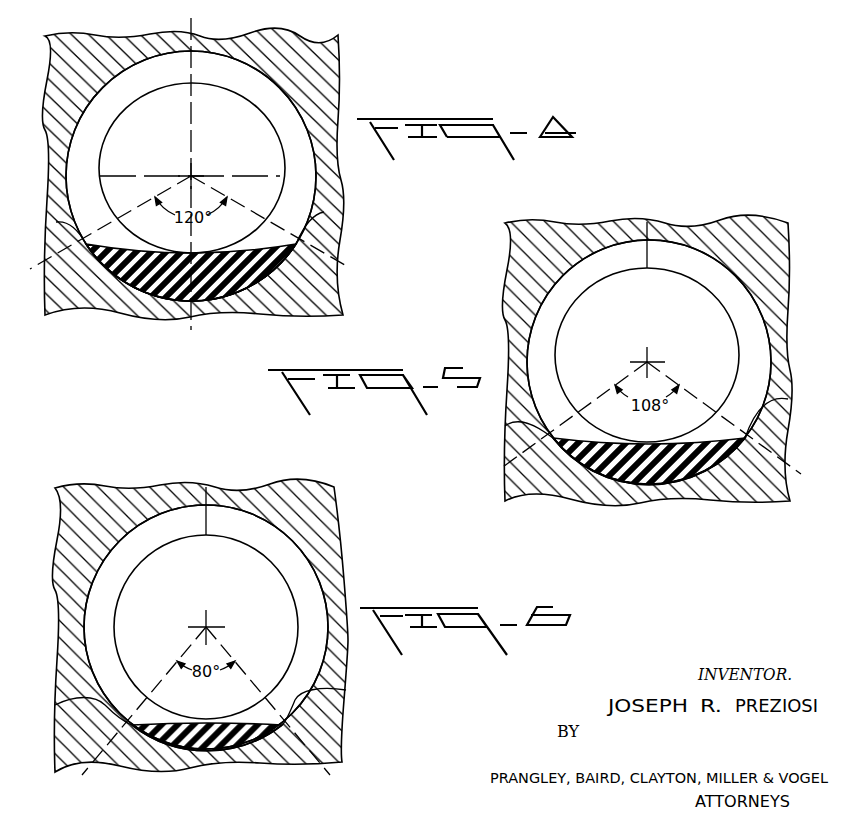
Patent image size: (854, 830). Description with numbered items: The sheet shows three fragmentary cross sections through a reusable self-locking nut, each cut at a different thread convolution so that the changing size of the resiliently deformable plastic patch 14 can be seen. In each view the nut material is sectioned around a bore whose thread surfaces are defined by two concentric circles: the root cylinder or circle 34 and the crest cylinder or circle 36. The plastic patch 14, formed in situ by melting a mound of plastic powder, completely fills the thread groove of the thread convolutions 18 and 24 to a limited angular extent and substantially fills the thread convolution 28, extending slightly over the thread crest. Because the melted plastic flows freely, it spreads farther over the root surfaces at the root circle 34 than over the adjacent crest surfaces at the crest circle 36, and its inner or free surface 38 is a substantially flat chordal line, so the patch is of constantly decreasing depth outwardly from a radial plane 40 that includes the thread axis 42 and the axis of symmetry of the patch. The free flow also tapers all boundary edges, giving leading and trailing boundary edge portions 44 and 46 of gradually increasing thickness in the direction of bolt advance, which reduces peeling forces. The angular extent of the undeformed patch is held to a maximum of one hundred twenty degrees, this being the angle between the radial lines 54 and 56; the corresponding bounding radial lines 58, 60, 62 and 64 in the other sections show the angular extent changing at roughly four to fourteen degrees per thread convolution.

In FIG. 4, the plastic patch 14 is at (143, 290).
In FIG. 5, the plastic patch 14 is at (592, 475).
In FIG. 6, the plastic patch 14 is at (215, 750).
In FIG. 5, the thread convolution 18 is at (540, 322).
In FIG. 4, the thread convolution 24 is at (80, 182).
In FIG. 6, the thread convolution 28 is at (95, 600).
In FIG. 4, the root cylinder or circle 34 is at (308, 116).
In FIG. 5, the root cylinder or circle 34 is at (706, 245).
In FIG. 6, the root cylinder or circle 34 is at (318, 566).
In FIG. 4, the crest cylinder or circle 36 is at (167, 93).
In FIG. 5, the crest cylinder or circle 36 is at (655, 270).
In FIG. 6, the crest cylinder or circle 36 is at (204, 538).
In FIG. 4, the inner or free surface of the patch 38 is at (177, 252).
In FIG. 5, the inner or free surface of the patch 38 is at (637, 440).
In FIG. 6, the inner or free surface of the patch 38 is at (212, 722).
In FIG. 4, the radial plane 40 is at (190, 108).
In FIG. 4, the thread axis 42 is at (192, 176).
In FIG. 4, the leading boundary edge portion 44 is at (60, 224).
In FIG. 5, the leading boundary edge portion 44 is at (512, 432).
In FIG. 6, the leading boundary edge portion 44 is at (82, 708).
In FIG. 4, the trailing boundary edge portion 46 is at (324, 214).
In FIG. 5, the trailing boundary edge portion 46 is at (770, 402).
In FIG. 6, the trailing boundary edge portion 46 is at (346, 700).
In FIG. 4, the radial line 54 is at (136, 197).
In FIG. 4, the radial line 56 is at (249, 197).
In FIG. 5, the left radial line 58 is at (592, 382).
In FIG. 5, the right radial line 60 is at (700, 384).
In FIG. 6, the left radial line 62 is at (160, 685).
In FIG. 6, the right radial line 64 is at (252, 680).